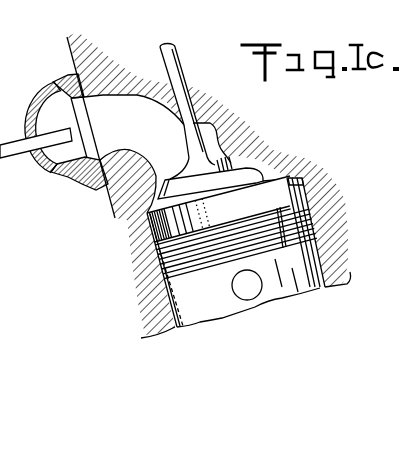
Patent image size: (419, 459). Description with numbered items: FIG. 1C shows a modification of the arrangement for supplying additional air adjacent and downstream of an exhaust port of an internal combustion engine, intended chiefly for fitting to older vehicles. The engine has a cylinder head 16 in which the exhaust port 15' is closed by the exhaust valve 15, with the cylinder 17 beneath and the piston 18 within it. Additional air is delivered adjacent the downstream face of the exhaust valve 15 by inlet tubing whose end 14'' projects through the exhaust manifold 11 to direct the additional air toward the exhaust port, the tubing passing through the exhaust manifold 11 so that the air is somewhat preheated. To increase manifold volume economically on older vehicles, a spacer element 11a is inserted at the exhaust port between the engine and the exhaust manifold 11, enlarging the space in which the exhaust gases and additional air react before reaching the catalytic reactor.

The exhaust manifold 11 is at (53, 88).
The spacer element 11a is at (101, 190).
The end of the tubing 14'' is at (36, 140).
The exhaust valve 15 is at (222, 113).
The exhaust port 15' is at (250, 137).
The cylinder head 16 is at (107, 95).
The cylinder 17 is at (305, 186).
The piston 18 is at (327, 248).